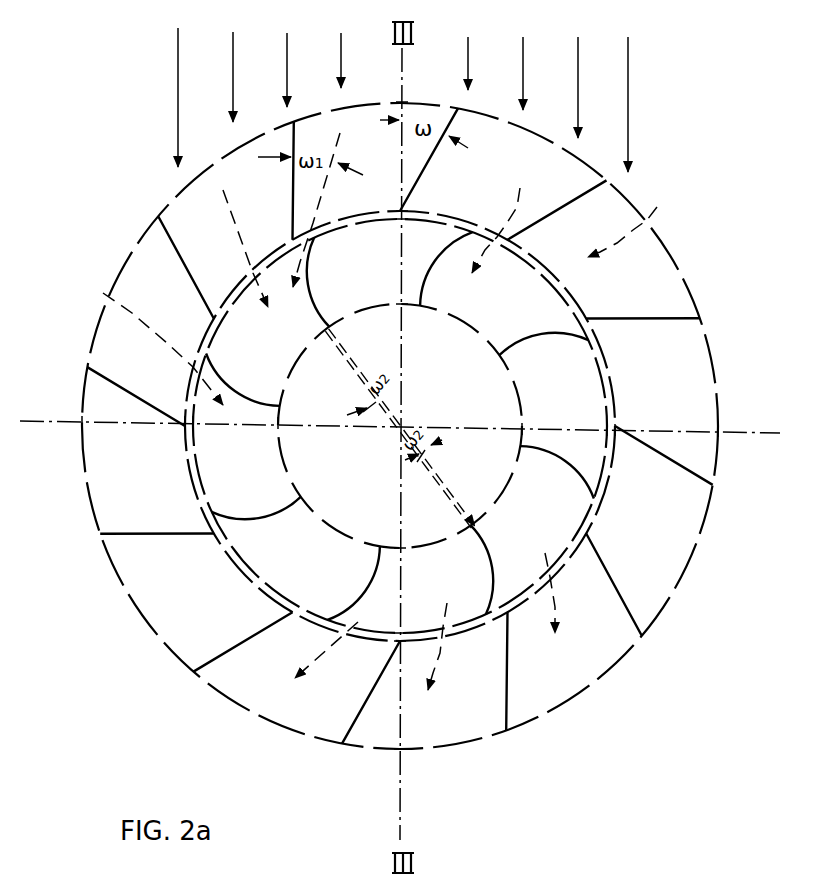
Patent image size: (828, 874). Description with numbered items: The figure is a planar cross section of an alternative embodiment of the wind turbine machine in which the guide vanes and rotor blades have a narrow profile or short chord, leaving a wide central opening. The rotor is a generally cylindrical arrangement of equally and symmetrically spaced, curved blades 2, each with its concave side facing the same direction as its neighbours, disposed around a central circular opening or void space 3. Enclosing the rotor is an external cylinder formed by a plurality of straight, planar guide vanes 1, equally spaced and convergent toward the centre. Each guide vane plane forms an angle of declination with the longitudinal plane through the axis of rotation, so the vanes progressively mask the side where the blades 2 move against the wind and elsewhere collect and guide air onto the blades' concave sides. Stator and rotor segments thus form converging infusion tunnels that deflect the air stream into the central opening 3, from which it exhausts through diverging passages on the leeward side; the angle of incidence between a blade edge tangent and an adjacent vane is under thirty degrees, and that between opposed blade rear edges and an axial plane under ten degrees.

The guide vanes 1 is at (620, 590).
The blades 2 is at (365, 578).
The central circular opening 3 is at (486, 398).